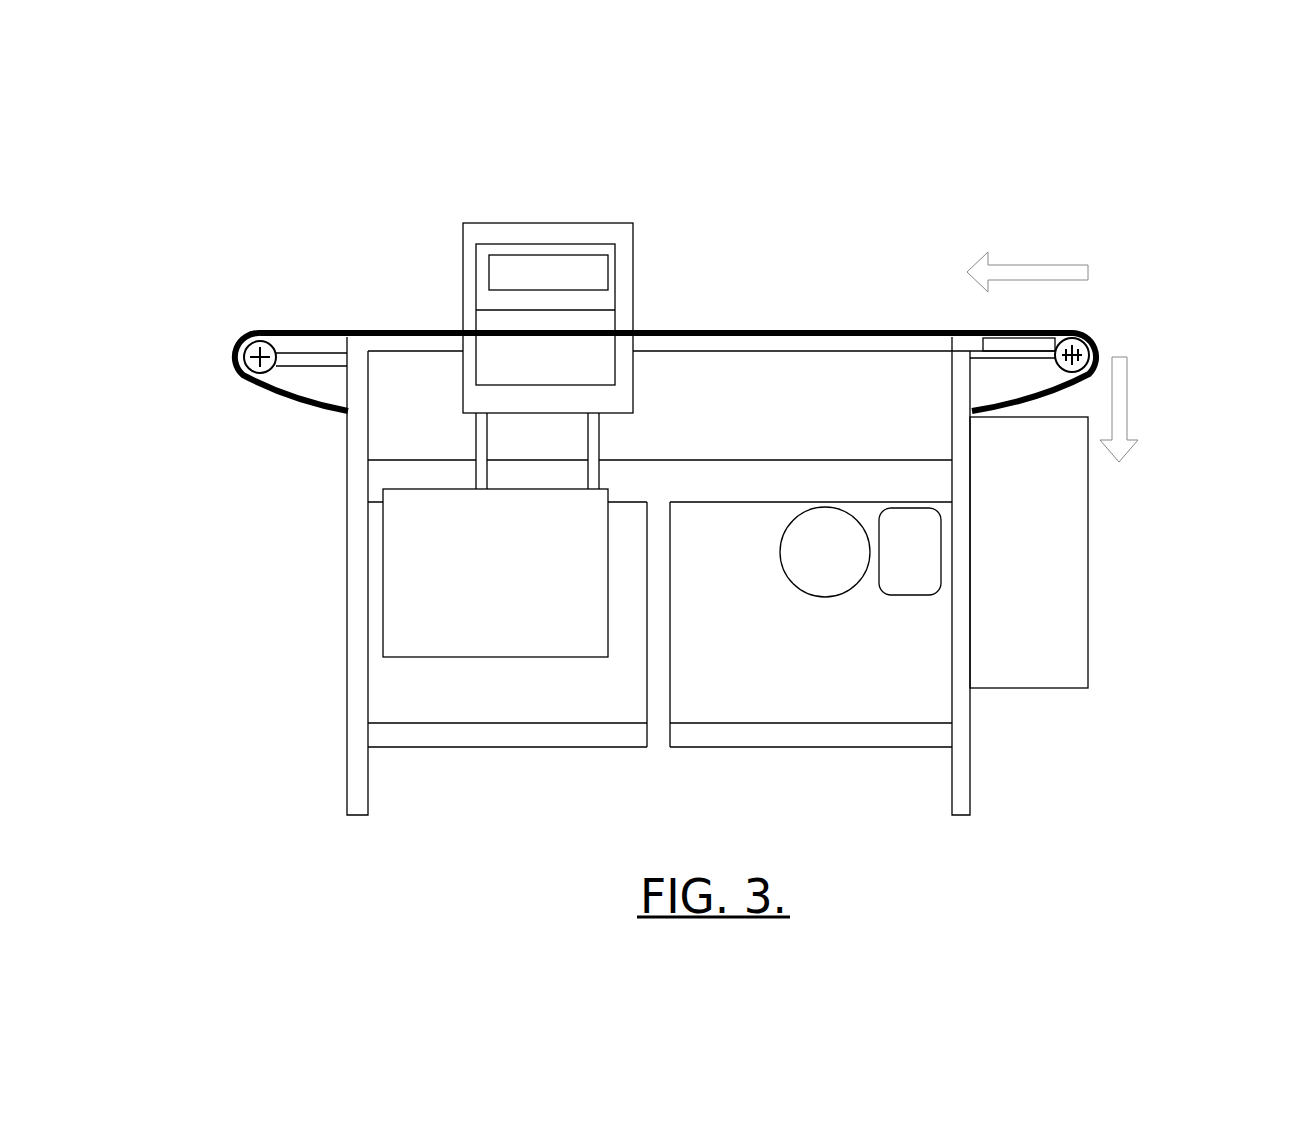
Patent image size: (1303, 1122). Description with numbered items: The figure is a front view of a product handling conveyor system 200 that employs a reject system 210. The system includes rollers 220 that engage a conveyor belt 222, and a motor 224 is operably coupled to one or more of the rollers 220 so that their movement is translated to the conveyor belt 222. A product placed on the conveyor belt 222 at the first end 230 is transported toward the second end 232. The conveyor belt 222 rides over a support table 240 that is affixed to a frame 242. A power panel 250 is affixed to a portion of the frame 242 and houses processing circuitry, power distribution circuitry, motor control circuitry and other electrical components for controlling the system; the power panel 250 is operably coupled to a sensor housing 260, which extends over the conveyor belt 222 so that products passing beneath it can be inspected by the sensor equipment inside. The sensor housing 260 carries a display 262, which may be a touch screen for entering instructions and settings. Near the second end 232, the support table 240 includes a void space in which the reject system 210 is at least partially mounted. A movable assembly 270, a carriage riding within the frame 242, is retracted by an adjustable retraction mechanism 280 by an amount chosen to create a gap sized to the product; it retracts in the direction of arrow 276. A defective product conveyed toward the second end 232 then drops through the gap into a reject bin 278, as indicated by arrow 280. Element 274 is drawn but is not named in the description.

The product handling conveyor system 200 is at (867, 92).
The reject system 210 is at (1133, 225).
The rollers 220 is at (258, 372).
The conveyor belt 222 is at (702, 322).
The motor 224 is at (813, 578).
The first end 230 is at (252, 328).
The second end 232 is at (1112, 337).
The support table 240 is at (450, 344).
The frame 242 is at (618, 738).
The power panel 250 is at (432, 578).
The sensor housing 260 is at (543, 292).
The display 262 is at (514, 270).
The movable assembly 270 is at (1037, 345).
The power supply 274 is at (903, 568).
The arrow 276 is at (1048, 270).
The reject bin 278 is at (1057, 577).
The adjustable retraction mechanism 280 is at (1122, 397).